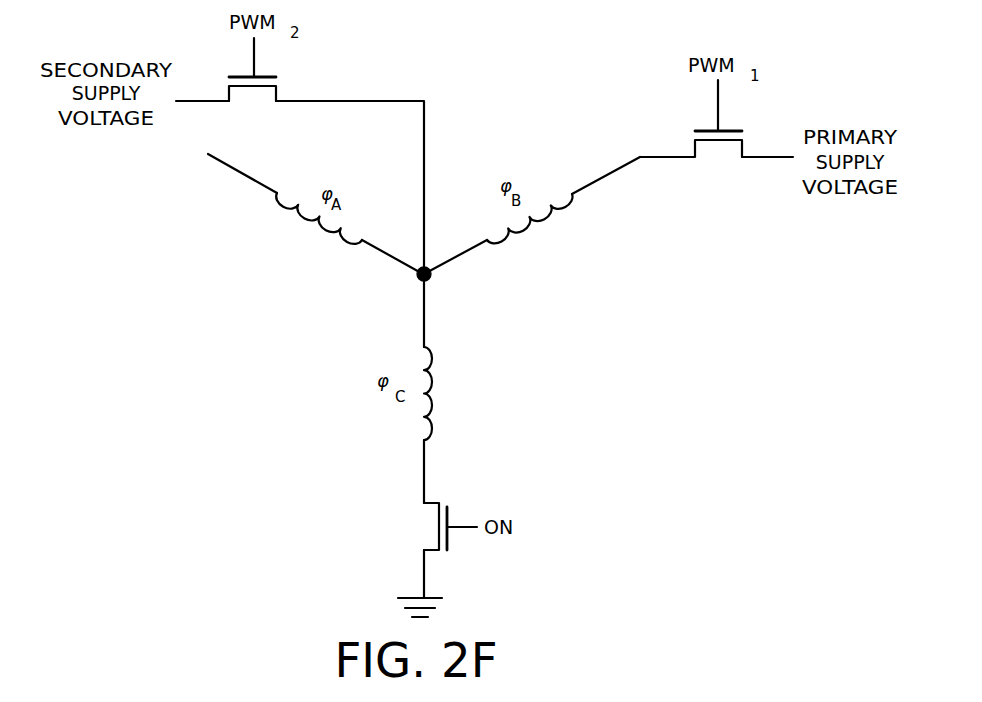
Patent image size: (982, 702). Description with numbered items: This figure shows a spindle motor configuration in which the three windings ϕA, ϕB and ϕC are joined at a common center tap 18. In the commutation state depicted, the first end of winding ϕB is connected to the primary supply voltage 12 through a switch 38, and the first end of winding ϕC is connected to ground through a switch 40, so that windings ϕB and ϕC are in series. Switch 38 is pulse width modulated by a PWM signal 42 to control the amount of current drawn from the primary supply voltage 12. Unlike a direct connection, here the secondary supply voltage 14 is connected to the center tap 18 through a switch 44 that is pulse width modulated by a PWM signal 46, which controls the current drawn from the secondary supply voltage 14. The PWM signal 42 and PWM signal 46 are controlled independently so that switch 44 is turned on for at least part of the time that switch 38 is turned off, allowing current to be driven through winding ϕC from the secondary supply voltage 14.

The primary supply voltage 12 is at (767, 158).
The secondary supply voltage 14 is at (184, 102).
The center tap 18 is at (440, 277).
The switch 38 is at (717, 164).
The switch 40 is at (453, 493).
The PWM signal 42 is at (718, 98).
The switch 44 is at (253, 108).
The PWM signal 46 is at (254, 54).